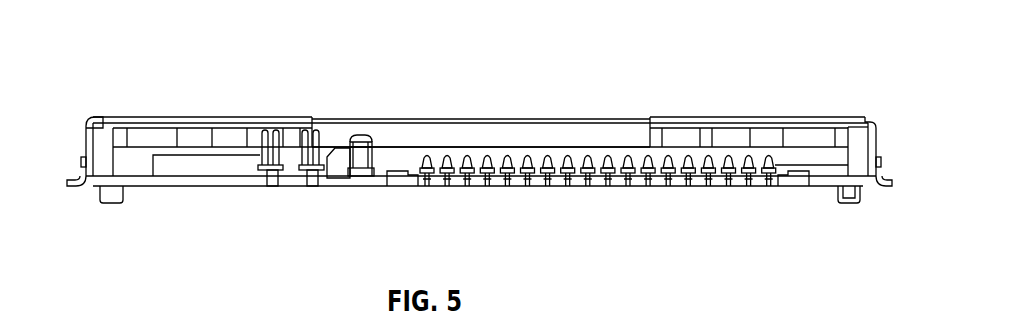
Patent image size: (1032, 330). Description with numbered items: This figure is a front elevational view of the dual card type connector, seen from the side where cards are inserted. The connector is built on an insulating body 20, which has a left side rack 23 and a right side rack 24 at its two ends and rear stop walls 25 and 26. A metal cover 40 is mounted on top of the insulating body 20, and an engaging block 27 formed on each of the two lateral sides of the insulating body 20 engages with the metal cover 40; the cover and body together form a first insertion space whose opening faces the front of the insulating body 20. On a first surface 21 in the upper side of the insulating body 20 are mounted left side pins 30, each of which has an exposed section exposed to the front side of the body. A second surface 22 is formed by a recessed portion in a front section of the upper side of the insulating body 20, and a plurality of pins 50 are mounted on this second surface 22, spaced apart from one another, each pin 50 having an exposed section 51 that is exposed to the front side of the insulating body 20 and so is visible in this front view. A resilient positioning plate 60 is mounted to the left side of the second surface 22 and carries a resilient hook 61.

The insulating body 20 is at (230, 187).
The first surface 21 is at (415, 147).
The second surface 22 is at (815, 165).
The left side rack 23 is at (88, 140).
The right side rack 24 is at (870, 140).
The rear stop wall 25 is at (207, 117).
The rear stop wall 26 is at (762, 117).
The engaging block 27 is at (80, 163).
The left side pin 30 is at (277, 133).
The metal cover 40 is at (557, 121).
The pin 50 is at (491, 156).
The exposed section 51 is at (470, 187).
The resilient positioning plate 60 is at (350, 148).
The resilient hook 61 is at (360, 136).